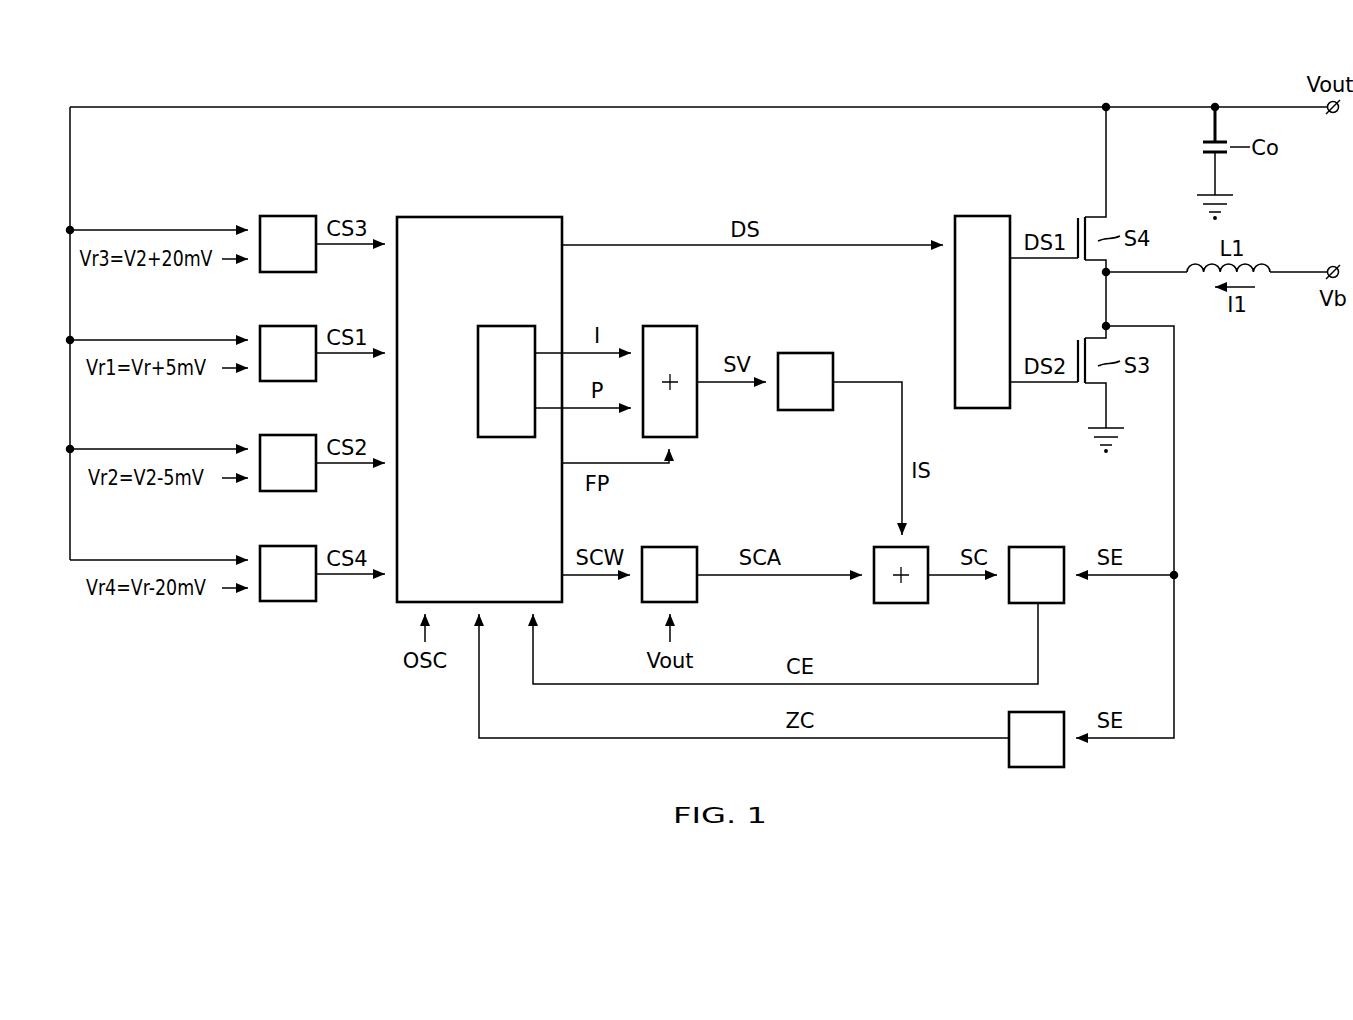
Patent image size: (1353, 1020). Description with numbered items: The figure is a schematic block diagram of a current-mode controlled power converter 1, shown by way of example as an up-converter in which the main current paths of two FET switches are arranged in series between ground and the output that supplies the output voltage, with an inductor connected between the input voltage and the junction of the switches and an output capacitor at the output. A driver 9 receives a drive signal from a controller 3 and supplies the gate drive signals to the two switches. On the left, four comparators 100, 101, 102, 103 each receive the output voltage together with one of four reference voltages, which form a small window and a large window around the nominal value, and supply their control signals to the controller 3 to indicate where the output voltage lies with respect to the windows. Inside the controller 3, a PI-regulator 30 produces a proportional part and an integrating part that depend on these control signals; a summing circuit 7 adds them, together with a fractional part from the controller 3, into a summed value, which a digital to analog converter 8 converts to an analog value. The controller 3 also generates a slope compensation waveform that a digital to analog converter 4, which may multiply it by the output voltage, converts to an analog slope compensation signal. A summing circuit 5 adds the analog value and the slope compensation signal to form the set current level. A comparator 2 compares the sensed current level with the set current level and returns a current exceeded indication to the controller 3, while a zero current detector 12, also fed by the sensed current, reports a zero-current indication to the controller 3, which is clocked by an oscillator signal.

The current-mode controlled power converter 1 is at (773, 87).
The comparator 2 is at (1040, 547).
The controller 3 is at (446, 216).
The digital to analog converter 4 is at (665, 547).
The summing circuit 5 is at (898, 603).
The summing circuit 7 is at (671, 326).
The digital to analog converter 8 is at (802, 353).
The driver 9 is at (983, 216).
The zero current detector 12 is at (1038, 767).
The PI-regulator 30 is at (500, 326).
The comparator 100 is at (288, 326).
The comparator 101 is at (288, 435).
The comparator 102 is at (288, 216).
The comparator 103 is at (288, 546).